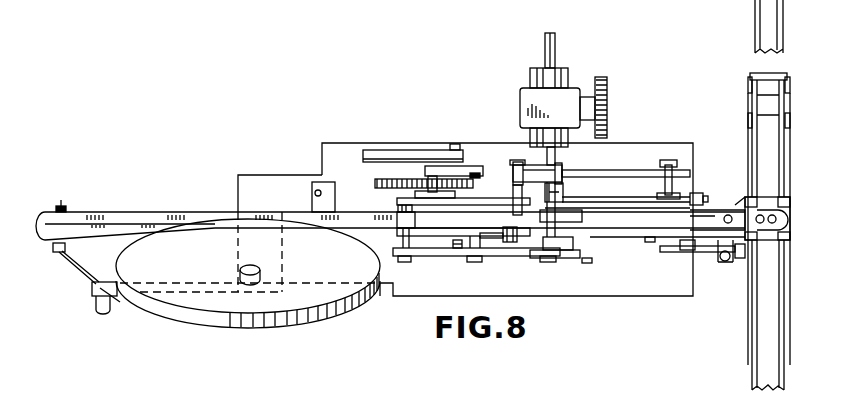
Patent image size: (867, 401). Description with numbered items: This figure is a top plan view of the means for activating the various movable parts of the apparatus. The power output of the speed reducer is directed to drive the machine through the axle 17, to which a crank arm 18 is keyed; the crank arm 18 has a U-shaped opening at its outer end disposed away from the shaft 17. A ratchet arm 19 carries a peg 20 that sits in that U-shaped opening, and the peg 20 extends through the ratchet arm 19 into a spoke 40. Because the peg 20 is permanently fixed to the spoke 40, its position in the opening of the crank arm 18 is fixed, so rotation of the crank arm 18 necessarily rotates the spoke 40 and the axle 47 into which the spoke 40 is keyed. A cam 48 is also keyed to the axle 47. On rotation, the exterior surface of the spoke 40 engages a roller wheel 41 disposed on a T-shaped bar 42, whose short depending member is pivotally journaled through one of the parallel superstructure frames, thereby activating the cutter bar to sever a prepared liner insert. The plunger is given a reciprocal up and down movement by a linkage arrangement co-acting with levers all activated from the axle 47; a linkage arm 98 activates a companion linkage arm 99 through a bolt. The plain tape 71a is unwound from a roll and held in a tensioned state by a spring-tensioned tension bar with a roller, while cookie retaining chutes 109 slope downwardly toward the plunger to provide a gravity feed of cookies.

The axle 17 is at (545, 38).
The crank arm 18 is at (538, 172).
The ratchet arm 19 is at (385, 188).
The peg 20 is at (517, 163).
The spoke 40 is at (528, 196).
The roller wheel 41 is at (561, 185).
The T-shaped bar 42 is at (650, 193).
The axle 47 is at (514, 228).
The cam 48 is at (588, 217).
The plain tape 71a is at (135, 212).
The linkage arm 98 is at (589, 242).
The companion linkage arm 99 is at (572, 252).
The cookie retaining chutes 109 is at (755, 30).